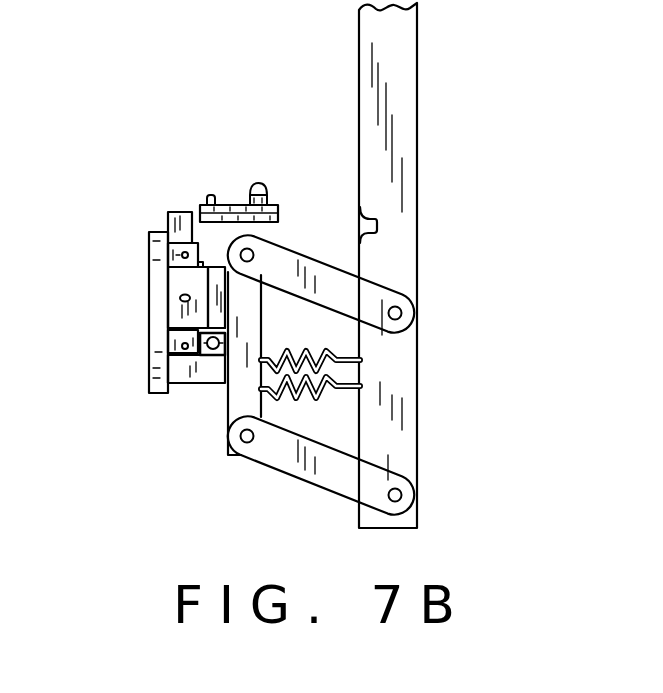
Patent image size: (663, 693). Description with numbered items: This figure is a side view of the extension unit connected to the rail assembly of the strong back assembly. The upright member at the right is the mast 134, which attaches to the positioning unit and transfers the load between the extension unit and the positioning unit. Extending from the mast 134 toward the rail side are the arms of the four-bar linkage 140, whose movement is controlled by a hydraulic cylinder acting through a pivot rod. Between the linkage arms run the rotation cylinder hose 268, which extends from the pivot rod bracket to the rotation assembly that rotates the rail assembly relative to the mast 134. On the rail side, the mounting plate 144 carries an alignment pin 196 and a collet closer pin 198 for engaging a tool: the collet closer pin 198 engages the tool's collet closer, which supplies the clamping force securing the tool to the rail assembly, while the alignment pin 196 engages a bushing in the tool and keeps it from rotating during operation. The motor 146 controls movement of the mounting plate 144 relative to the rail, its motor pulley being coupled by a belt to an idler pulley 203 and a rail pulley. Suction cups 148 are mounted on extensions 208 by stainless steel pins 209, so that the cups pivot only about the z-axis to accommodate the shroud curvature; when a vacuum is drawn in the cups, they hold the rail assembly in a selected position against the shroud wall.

The mast 134 is at (395, 65).
The four-bar linkage 140 is at (312, 272).
The mounting plate 144 is at (214, 226).
The motor 146 is at (190, 375).
The suction cups 148 is at (158, 342).
The alignment pin 196 is at (207, 199).
The collet closer pin 198 is at (263, 184).
The idler pulley 203 is at (212, 352).
The extensions 208 is at (185, 288).
The stainless steel pins 209 is at (175, 254).
The rotation cylinder hose 268 is at (341, 354).